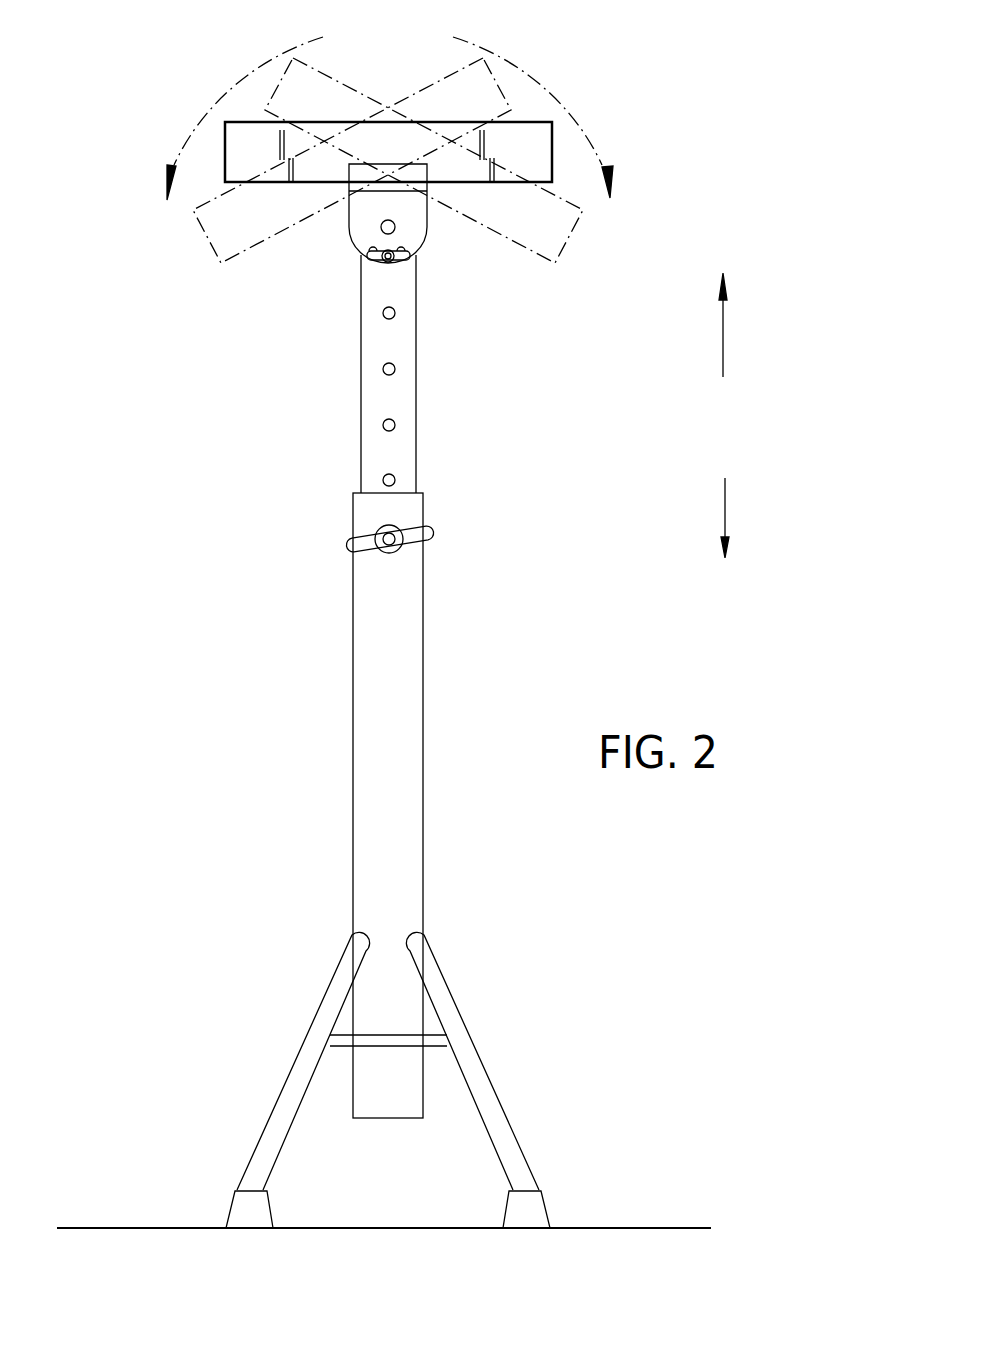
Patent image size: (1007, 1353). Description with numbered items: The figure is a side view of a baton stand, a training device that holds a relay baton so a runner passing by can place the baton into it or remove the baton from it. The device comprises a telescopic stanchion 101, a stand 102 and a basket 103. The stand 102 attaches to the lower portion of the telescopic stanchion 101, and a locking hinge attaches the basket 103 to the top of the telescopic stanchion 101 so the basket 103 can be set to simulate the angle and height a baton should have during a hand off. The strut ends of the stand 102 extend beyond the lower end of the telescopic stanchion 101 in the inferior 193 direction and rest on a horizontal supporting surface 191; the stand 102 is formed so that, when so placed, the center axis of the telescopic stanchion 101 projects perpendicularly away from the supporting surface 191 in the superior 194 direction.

The telescopic stanchion 101 is at (310, 592).
The stand 102 is at (500, 1110).
The basket 103 is at (552, 137).
The supporting surface 191 is at (622, 1227).
The inferior direction 193 is at (758, 513).
The superior direction 194 is at (758, 325).